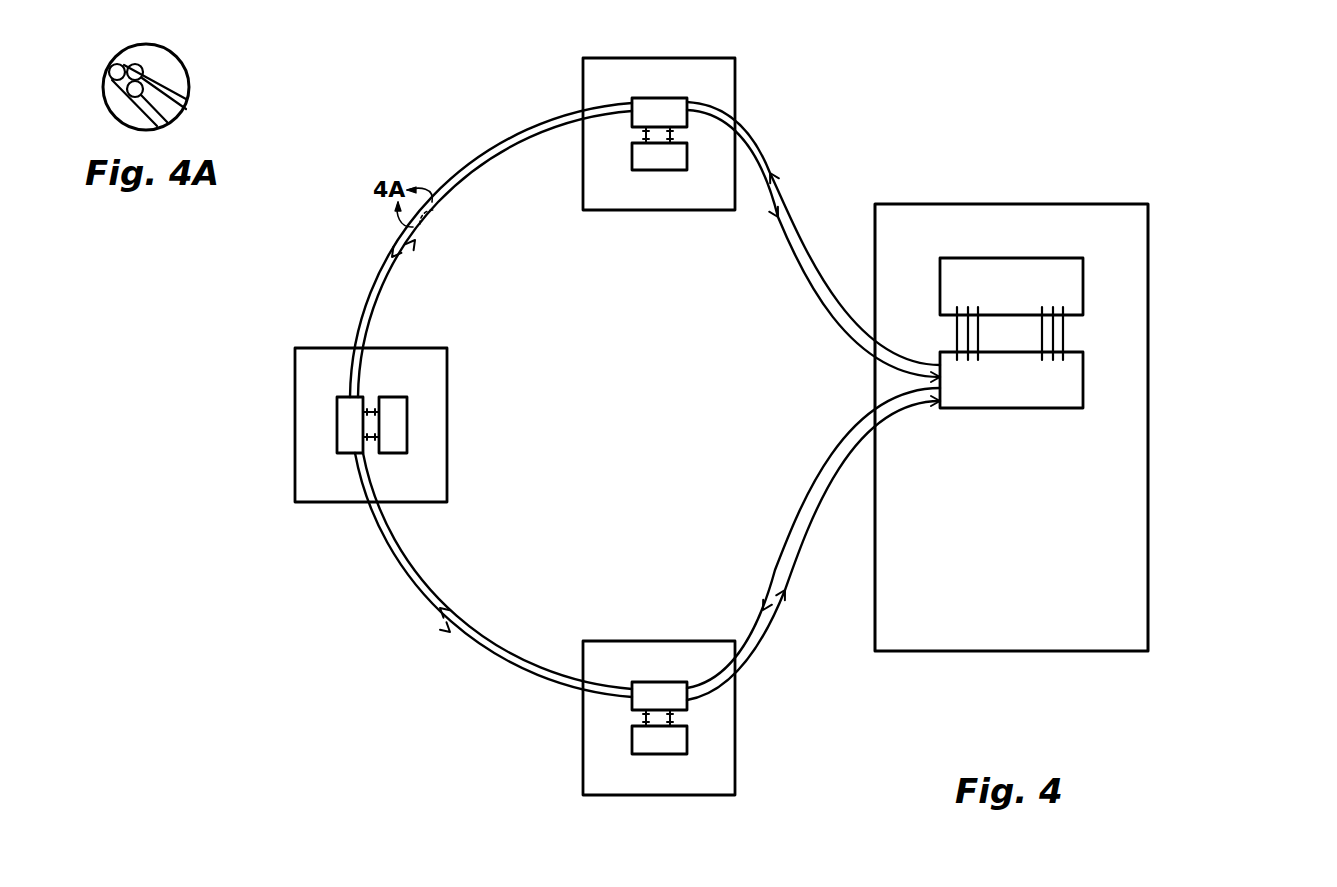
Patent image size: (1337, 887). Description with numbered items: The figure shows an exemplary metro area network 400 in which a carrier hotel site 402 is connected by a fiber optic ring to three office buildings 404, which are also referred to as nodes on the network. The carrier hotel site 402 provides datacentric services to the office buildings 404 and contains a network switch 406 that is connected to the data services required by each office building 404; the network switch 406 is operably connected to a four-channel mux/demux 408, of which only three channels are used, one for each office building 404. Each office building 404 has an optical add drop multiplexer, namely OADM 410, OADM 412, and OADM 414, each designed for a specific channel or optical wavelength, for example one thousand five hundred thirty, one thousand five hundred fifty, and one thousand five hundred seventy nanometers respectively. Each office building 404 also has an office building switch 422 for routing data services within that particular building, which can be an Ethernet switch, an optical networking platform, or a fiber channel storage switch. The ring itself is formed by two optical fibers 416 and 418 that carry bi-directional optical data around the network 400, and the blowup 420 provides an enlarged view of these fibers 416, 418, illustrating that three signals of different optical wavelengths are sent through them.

In FIG. 4, the metro area network 400 is at (277, 663).
In FIG. 4, the carrier hotel site 402 is at (1188, 410).
In FIG. 4, the office building 404 is at (670, 52).
In FIG. 4, the network switch 406 is at (1020, 270).
In FIG. 4, the four-channel mux/demux 408 is at (1052, 403).
In FIG. 4, the optical add drop multiplexer 410 is at (690, 100).
In FIG. 4, the optical add drop multiplexer 412 is at (337, 408).
In FIG. 4, the optical add drop multiplexer 414 is at (643, 682).
In FIG. 4, the optical fiber 416 is at (513, 138).
In FIG. 4, the optical fiber 418 is at (499, 162).
In FIG. 4A, the blowup 420 is at (182, 52).
In FIG. 4, the office building switch 422 is at (660, 172).